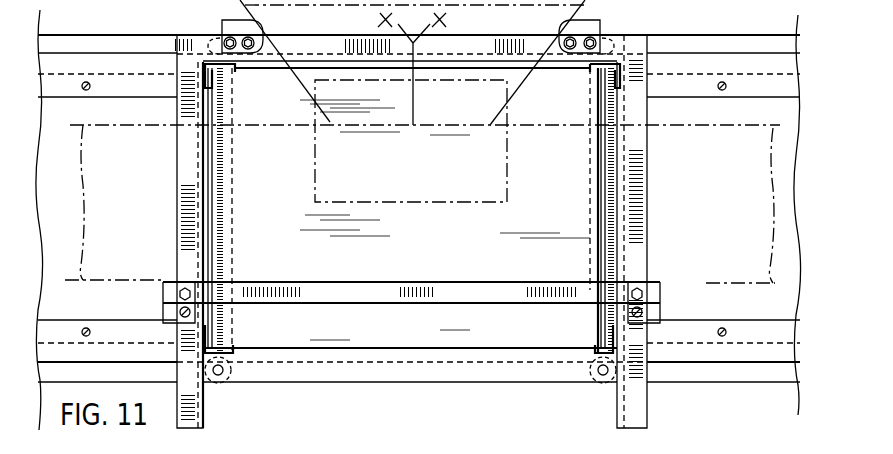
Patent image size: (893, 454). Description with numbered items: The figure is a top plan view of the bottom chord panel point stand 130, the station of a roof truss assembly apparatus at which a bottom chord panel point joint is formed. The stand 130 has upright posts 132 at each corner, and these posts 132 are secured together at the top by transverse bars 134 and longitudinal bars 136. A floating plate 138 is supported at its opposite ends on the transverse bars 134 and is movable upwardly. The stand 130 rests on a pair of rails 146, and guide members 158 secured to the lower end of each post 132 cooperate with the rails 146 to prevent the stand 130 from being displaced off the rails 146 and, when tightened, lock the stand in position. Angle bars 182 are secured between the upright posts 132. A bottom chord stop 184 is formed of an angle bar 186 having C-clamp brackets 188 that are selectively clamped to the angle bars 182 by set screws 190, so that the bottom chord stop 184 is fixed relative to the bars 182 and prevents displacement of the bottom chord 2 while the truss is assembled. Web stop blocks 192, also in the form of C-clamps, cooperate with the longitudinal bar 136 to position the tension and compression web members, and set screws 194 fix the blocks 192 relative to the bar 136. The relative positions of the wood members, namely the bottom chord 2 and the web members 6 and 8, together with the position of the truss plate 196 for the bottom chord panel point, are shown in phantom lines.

The bottom chord 2 is at (291, 119).
The web member 6 is at (395, 64).
The web member 8 is at (429, 23).
The bottom chord panel point stand 130 is at (648, 218).
The upright post 132 is at (203, 72).
The transverse bar 134 is at (220, 222).
The longitudinal bar 136 is at (421, 377).
The floating plate 138 is at (559, 215).
The rail 146 is at (104, 88).
The guide member 158 is at (230, 382).
The angle bar 182 is at (187, 143).
The bottom chord stop 184 is at (447, 275).
The angle bar 186 is at (305, 277).
The C-clamp bracket 188 is at (162, 306).
The set screw 190 is at (192, 313).
The web stop block 192 is at (228, 22).
The set screw 194 is at (240, 52).
The truss plate 196 is at (312, 162).